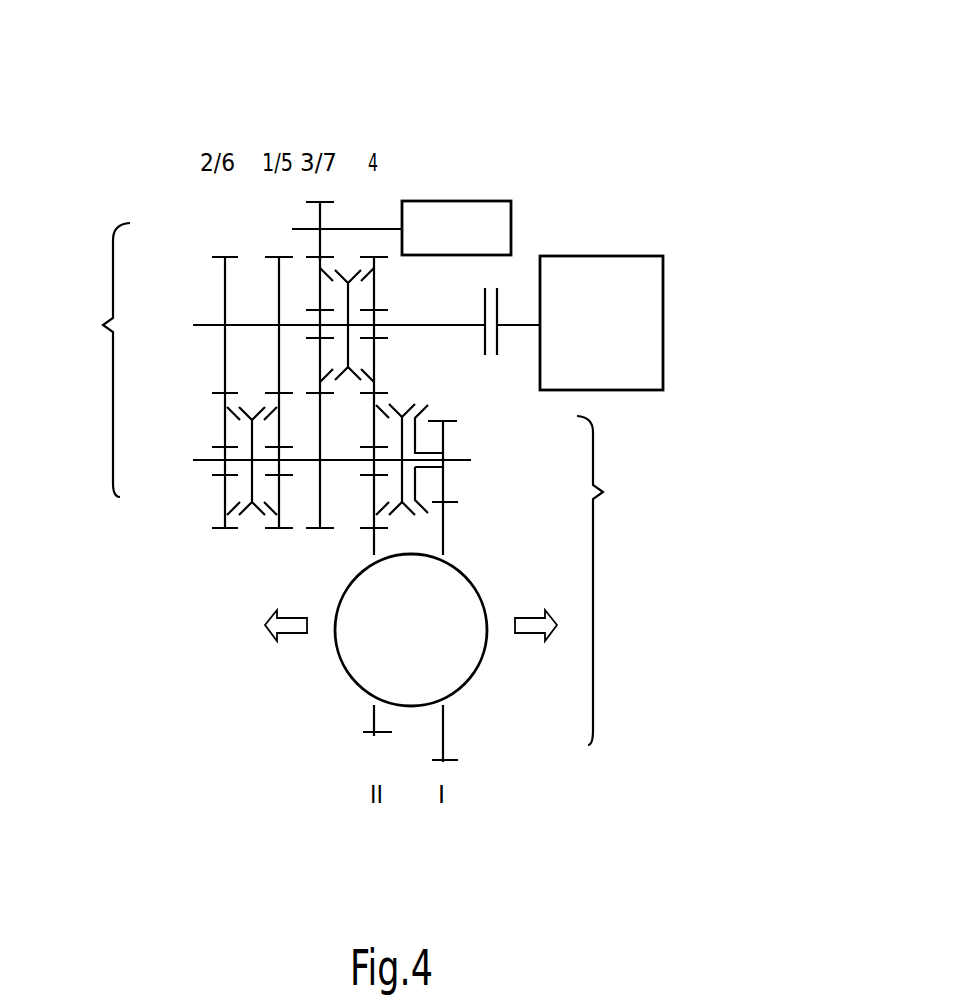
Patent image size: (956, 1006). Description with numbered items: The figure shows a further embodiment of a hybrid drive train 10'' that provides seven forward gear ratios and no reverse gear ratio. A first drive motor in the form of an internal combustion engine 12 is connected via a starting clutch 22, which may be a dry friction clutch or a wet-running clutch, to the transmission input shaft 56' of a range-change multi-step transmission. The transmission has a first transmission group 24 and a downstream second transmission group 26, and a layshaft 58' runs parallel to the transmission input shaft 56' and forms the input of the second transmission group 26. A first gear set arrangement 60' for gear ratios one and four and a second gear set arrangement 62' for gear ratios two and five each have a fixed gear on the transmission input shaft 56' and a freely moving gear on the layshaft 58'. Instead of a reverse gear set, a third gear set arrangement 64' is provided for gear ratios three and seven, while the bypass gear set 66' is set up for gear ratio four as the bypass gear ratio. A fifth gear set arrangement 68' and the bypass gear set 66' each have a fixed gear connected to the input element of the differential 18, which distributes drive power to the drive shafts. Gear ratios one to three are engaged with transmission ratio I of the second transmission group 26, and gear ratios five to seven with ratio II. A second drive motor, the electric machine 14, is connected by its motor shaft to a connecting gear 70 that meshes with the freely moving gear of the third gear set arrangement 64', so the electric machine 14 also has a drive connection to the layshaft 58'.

The drive train 10'' is at (702, 92).
The internal combustion engine 12 is at (652, 298).
The electric machine 14 is at (496, 217).
The differential 18 is at (470, 680).
The starting clutch 22 is at (502, 313).
The first transmission group 24 is at (100, 360).
The second transmission group 26 is at (608, 580).
The transmission input shaft 56' is at (367, 358).
The layshaft 58' is at (380, 477).
The first gear set arrangement 60' is at (250, 501).
The second gear set arrangement 62' is at (175, 489).
The third gear set arrangement 64' is at (301, 506).
The bypass gear set 66' is at (324, 800).
The fifth gear set arrangement 68' is at (494, 802).
The connecting gear 70 is at (320, 222).